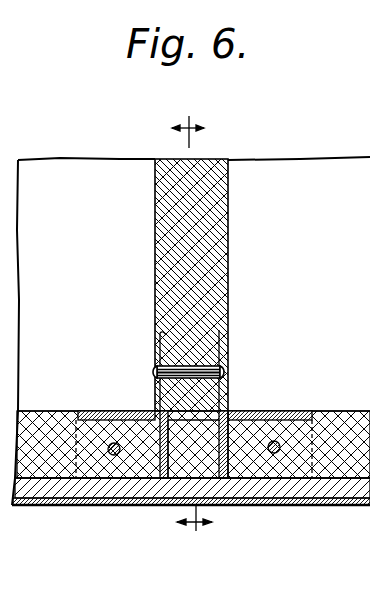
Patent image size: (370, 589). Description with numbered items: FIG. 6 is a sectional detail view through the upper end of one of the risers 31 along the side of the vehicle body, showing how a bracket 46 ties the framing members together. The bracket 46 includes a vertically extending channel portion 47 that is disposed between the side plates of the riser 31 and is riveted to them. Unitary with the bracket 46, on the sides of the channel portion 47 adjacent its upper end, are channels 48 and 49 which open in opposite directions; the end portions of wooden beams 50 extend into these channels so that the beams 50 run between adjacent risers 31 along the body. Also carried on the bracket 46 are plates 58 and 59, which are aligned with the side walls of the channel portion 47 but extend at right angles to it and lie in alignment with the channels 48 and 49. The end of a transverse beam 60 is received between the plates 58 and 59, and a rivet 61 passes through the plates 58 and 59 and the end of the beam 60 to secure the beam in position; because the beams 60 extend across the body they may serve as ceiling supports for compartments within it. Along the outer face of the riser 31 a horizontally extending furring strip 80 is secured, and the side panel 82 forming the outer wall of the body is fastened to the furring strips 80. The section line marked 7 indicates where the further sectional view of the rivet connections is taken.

The section line 7- 7 is at (192, 326).
The riser 31 is at (206, 466).
The bracket 46 is at (232, 412).
The channel portion 47 is at (158, 497).
The channel 48 is at (284, 412).
The channel 49 is at (105, 419).
The beam 50 is at (61, 412).
The plate 58 is at (230, 346).
The plate 59 is at (157, 337).
The beam 60 is at (228, 256).
The rivet 61 is at (236, 372).
The furring strip 80 is at (40, 502).
The side panel 82 is at (78, 497).